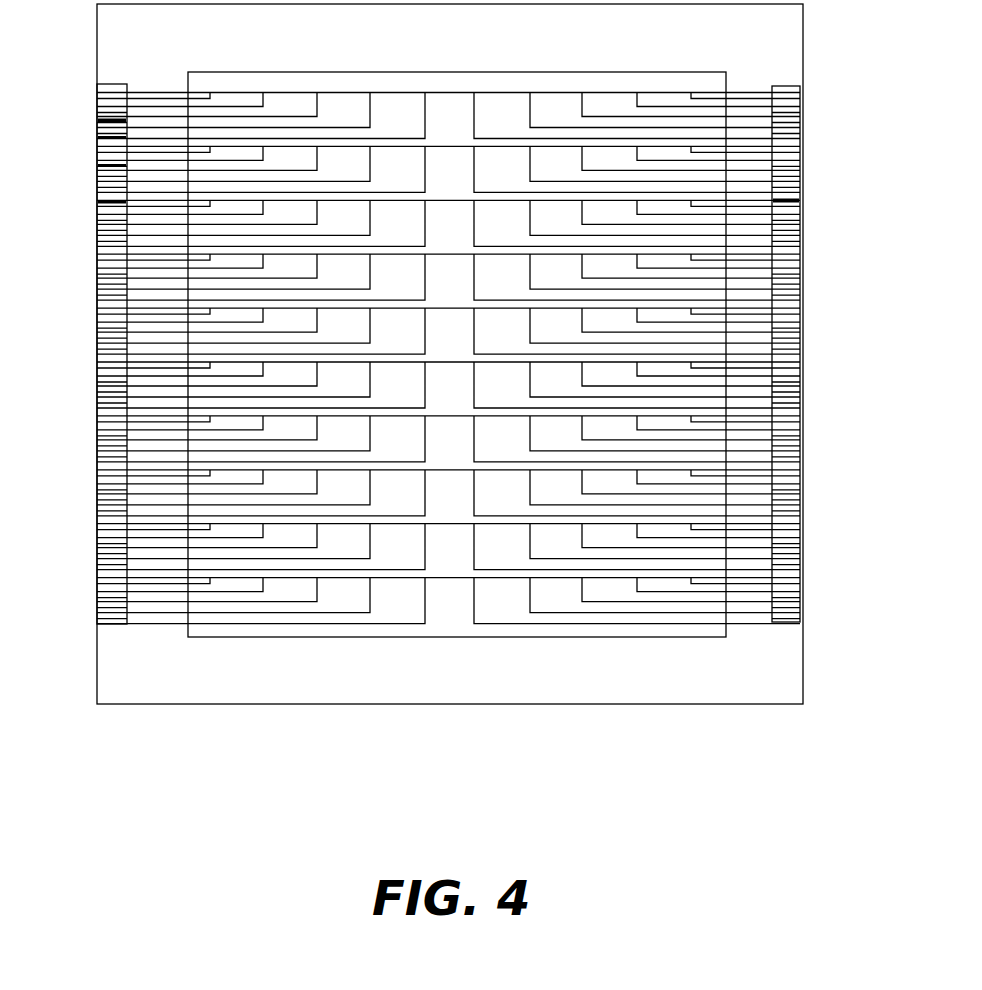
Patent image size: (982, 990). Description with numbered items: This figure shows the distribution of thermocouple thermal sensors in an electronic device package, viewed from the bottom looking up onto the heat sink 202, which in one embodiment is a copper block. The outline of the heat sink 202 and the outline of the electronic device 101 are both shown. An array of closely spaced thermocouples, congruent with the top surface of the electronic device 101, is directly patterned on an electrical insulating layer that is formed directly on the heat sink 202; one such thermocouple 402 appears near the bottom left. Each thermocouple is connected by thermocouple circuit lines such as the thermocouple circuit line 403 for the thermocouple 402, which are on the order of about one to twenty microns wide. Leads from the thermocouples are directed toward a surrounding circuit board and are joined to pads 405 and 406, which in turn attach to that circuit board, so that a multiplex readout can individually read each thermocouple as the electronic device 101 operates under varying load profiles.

The electronic device 101 is at (490, 425).
The heat sink 202 is at (687, 704).
The thermocouple 402 is at (417, 625).
The thermocouple circuit line 403 is at (283, 623).
The pad 405 is at (105, 143).
The pad 406 is at (803, 241).